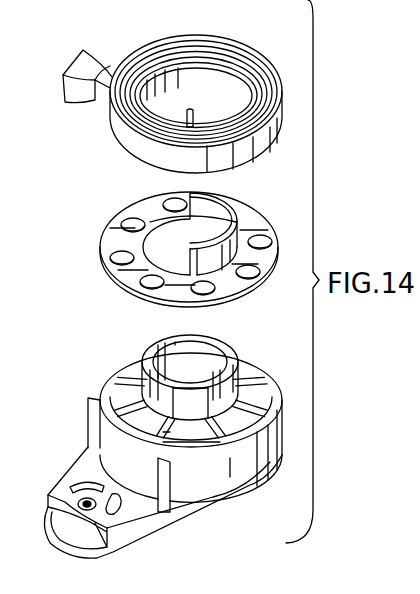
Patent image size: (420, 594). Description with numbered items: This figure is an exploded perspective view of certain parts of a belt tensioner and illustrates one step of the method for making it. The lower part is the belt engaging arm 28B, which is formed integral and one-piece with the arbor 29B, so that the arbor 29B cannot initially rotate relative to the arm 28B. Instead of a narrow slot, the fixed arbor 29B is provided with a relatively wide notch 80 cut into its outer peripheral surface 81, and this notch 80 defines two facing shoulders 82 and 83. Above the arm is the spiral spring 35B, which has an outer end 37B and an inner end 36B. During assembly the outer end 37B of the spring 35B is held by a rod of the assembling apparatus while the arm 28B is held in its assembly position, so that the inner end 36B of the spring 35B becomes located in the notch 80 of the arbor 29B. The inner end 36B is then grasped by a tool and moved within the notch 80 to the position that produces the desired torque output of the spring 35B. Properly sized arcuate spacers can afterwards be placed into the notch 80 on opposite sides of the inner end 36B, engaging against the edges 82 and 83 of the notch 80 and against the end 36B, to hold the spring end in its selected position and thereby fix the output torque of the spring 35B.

The belt engaging arm 28B is at (163, 433).
The arbor 29B is at (213, 340).
The spring 35B is at (221, 280).
The inner end of the spring 36B is at (190, 117).
The end of the spring 37B is at (62, 90).
The notch 80 is at (193, 397).
The outer peripheral surface 81 is at (150, 393).
The shoulder 82 is at (156, 412).
The shoulder 83 is at (252, 398).